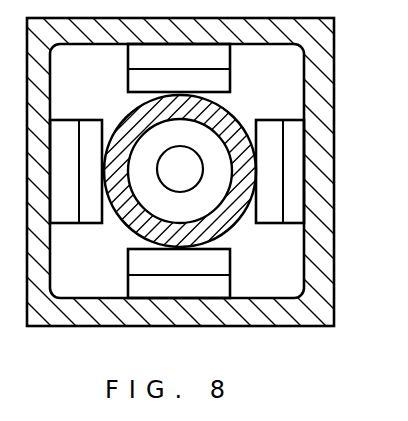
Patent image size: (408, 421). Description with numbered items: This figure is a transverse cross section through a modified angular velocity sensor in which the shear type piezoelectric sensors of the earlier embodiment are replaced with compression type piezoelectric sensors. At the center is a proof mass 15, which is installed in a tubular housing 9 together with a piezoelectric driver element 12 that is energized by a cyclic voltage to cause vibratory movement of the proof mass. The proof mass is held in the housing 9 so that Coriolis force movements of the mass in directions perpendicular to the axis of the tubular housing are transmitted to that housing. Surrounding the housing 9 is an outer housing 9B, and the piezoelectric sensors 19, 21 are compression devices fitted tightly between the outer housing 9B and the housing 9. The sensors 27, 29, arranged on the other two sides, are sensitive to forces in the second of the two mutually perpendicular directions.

The outer housing 9B is at (334, 37).
The piezoelectric sensor 19 is at (228, 62).
The piezoelectric sensor 21 is at (227, 85).
The shear sensor 27 is at (61, 213).
The shear sensor 29 is at (89, 213).
The tubular housing 9 is at (222, 114).
The piezoelectric driver element 12 is at (175, 160).
The proof mass 15 is at (191, 217).